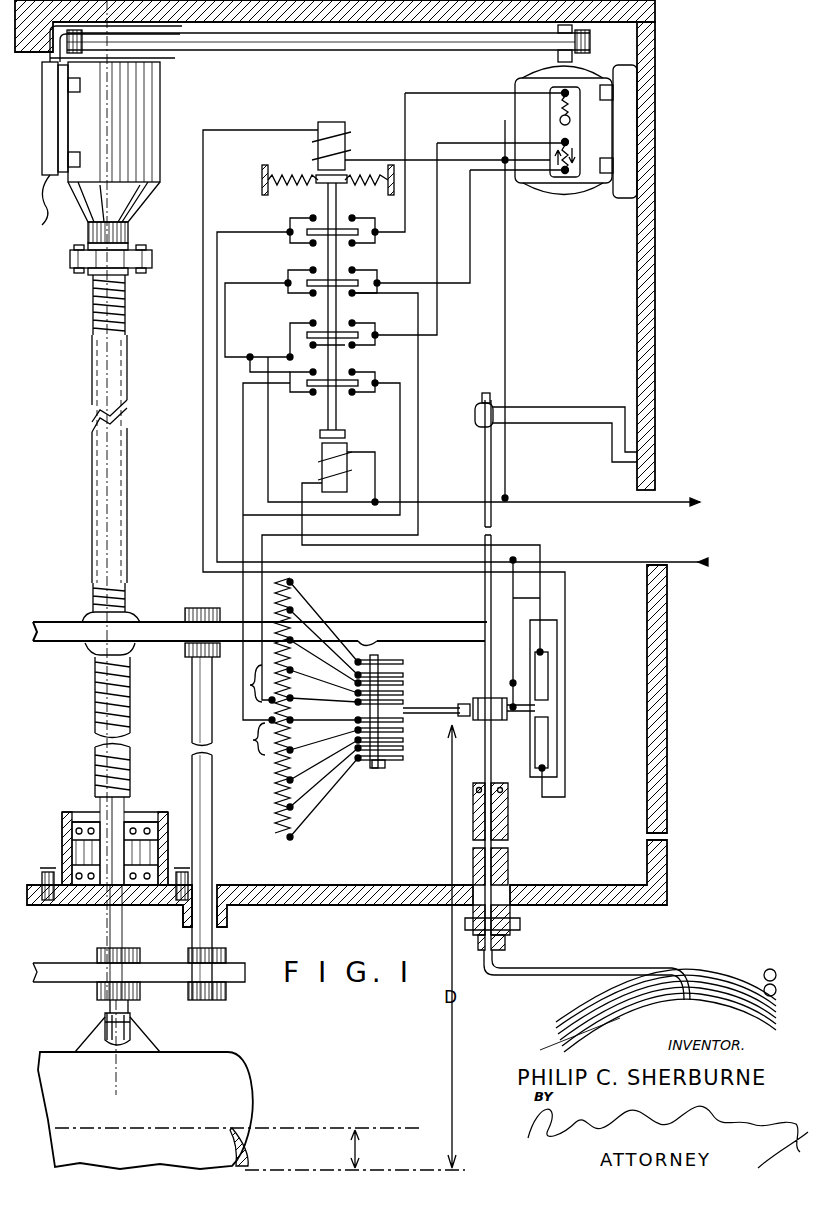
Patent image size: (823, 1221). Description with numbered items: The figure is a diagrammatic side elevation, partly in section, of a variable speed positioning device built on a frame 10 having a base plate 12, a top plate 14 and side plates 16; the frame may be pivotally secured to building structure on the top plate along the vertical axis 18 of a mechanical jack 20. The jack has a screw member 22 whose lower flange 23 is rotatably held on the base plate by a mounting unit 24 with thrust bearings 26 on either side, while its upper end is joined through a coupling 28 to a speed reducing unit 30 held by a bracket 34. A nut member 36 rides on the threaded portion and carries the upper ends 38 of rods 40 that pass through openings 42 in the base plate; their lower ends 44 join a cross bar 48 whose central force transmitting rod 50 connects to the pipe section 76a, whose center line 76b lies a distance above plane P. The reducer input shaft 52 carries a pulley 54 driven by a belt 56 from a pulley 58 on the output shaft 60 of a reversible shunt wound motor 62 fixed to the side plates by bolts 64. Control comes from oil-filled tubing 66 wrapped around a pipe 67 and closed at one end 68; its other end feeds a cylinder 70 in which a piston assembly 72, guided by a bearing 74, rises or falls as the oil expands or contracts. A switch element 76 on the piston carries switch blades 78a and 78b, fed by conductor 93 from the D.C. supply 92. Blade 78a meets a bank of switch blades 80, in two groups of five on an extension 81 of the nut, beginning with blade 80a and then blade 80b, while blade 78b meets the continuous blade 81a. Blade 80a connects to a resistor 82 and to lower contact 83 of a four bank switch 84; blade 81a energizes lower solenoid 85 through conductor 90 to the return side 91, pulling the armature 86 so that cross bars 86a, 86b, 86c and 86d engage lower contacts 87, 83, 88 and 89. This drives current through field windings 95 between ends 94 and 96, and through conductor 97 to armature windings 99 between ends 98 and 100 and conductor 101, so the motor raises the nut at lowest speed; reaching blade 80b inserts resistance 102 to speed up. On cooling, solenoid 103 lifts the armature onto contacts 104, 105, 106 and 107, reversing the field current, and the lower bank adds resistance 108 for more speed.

The frame 10 is at (680, 662).
The base plate 12 is at (318, 905).
The top plate 14 is at (490, 23).
The side plates 16 is at (656, 360).
The vertical axis 18 is at (62, 108).
The mechanical jack 20 is at (143, 352).
The screw member 22 is at (115, 501).
The flange 23 is at (62, 872).
The mounting unit 24 is at (85, 812).
The thrust bearings 26 is at (168, 862).
The coupling 28 is at (152, 258).
The speed reducing unit 30 is at (145, 112).
The bracket 34 is at (40, 203).
The nut member 36 is at (158, 622).
The upper ends of rods 38 is at (215, 600).
The rods 40 is at (191, 713).
The openings 42 is at (228, 916).
The lower ends of rods 44 is at (208, 1000).
The cross bar 48 is at (72, 970).
The force transmitting rod 50 is at (130, 1018).
The input shaft 52 is at (160, 38).
The pulley 54 is at (215, 40).
The belt 56 is at (348, 42).
The pulley 58 is at (558, 56).
The output shaft 60 is at (570, 68).
The electric motor 62 is at (577, 193).
The bolts 64 is at (614, 95).
The tubing 66 is at (595, 1012).
The pipe 67 is at (745, 952).
The end of coil 68 is at (770, 962).
The cylinder 70 is at (509, 828).
The piston assembly 72 is at (485, 768).
The bearing 74 is at (527, 420).
The switch element 76 is at (478, 695).
The pipe section 76a is at (238, 1068).
The center line 76b is at (365, 1128).
The switch blade 78a is at (455, 704).
The switch blade 78b is at (540, 708).
The switch blades 80 is at (388, 765).
The switch blade 80a is at (400, 660).
The switch blade 80b is at (372, 655).
The extension 81 is at (403, 640).
The switch blade 81a is at (548, 672).
The resistor 82 is at (300, 588).
The lower contact 83 is at (340, 295).
The four bank switch 84 is at (310, 415).
The lower solenoid 85 is at (348, 447).
The armature 86 is at (316, 190).
The cross bar 86a is at (351, 215).
The cross bar 86b is at (352, 270).
The cross bar 86c is at (380, 338).
The cross bar 86d is at (352, 378).
The lower contact 87 is at (350, 244).
The lower contact 88 is at (302, 355).
The lower contact 89 is at (312, 395).
The conductor 90 is at (337, 483).
The return side conductor 91 is at (606, 500).
The D.C. supply 92 is at (695, 544).
The conductor 93 is at (515, 598).
The end of field windings 94 is at (569, 142).
The field windings 95 is at (560, 176).
The end of field windings 96 is at (583, 192).
The conductor 97 is at (462, 560).
The end of armature windings 98 is at (569, 92).
The armature windings 99 is at (562, 106).
The end of armature windings 100 is at (560, 122).
The conductor 101 is at (508, 264).
The resistance 102 is at (286, 640).
The solenoid 103 is at (335, 122).
The contact 104 is at (310, 217).
The contact 105 is at (310, 270).
The contact 106 is at (310, 322).
The contact 107 is at (310, 375).
The resistance 108 is at (289, 778).